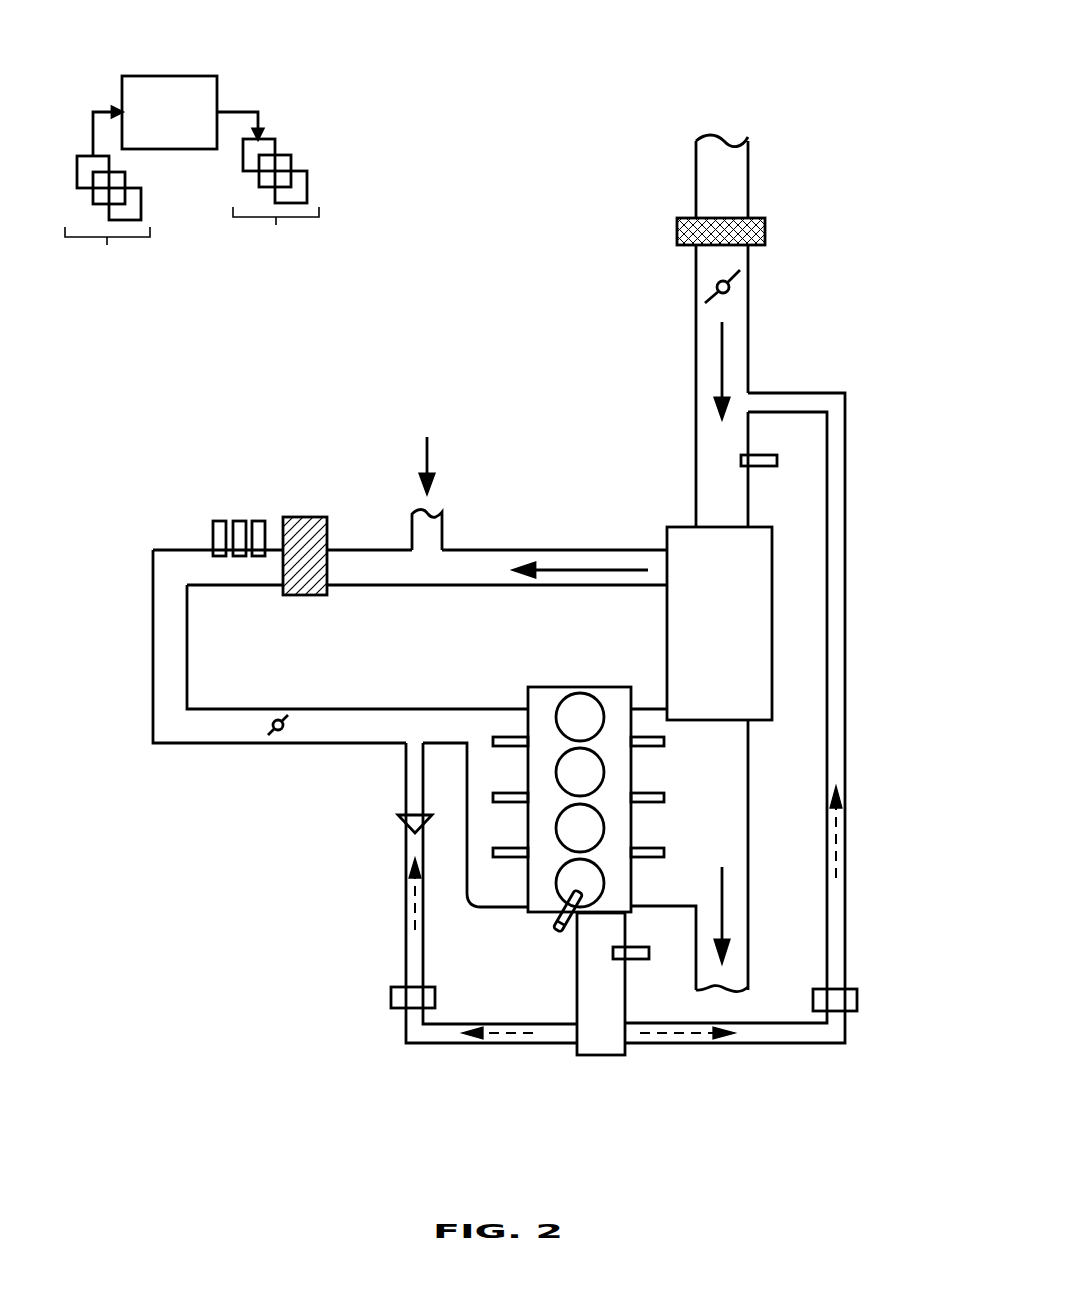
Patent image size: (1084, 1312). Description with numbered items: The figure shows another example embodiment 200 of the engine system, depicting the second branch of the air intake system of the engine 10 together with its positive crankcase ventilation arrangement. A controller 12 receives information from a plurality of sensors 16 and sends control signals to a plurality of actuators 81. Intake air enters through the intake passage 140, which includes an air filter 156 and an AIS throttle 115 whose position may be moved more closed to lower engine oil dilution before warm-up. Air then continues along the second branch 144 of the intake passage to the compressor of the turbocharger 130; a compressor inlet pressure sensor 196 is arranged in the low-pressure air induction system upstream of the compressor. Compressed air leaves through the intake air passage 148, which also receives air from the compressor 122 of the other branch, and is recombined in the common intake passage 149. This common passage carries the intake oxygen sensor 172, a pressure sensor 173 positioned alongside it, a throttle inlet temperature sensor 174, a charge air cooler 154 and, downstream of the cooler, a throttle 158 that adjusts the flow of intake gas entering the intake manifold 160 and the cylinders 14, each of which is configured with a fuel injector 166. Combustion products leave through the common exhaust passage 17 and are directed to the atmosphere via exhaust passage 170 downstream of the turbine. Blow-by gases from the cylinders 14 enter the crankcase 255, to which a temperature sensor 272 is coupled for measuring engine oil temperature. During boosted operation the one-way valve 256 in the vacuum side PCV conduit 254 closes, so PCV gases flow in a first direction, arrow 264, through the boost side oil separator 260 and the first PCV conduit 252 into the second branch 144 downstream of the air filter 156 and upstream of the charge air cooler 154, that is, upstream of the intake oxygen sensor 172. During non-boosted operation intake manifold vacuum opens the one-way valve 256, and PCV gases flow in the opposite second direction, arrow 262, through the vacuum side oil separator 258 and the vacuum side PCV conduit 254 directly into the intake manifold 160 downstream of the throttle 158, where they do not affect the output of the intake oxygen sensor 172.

The embodiment of the engine system 200 is at (874, 30).
The controller 12 is at (169, 112).
The sensors 16 is at (107, 197).
The actuators 81 is at (268, 190).
The intake passage 140 is at (748, 171).
The air filter 156 is at (765, 226).
The AIS throttle 115 is at (716, 286).
The second branch of the intake passage 144 is at (696, 366).
The first PCV conduit 252 is at (790, 393).
The compressor inlet pressure sensor 196 is at (762, 467).
The turbocharger 130 is at (702, 634).
The intake air passage 148 is at (560, 550).
The compressor 122 is at (423, 450).
The intake oxygen sensor 172 is at (219, 520).
The pressure sensor 173 is at (240, 520).
The throttle inlet temperature sensor 174 is at (258, 520).
The charge air cooler 154 is at (309, 517).
The common intake passage 149 is at (357, 709).
The throttle 158 is at (284, 735).
The one-way valve 256 is at (401, 814).
The second PCV conduit 254 is at (406, 937).
The vacuum side oil separator 258 is at (398, 1010).
The arrow indicating second direction of PCV flow 262 is at (408, 898).
The arrow indicating first direction of PCV flow 264 is at (845, 826).
The cylinders 14 is at (580, 692).
The intake manifold 160 is at (497, 770).
The engine 10 is at (490, 921).
The fuel injector 166 is at (561, 926).
The crankcase 255 is at (582, 996).
The temperature sensor 272 is at (633, 960).
The exhaust passage 17 is at (748, 819).
The exhaust passage 170 is at (748, 969).
The boost side oil separator 260 is at (853, 989).